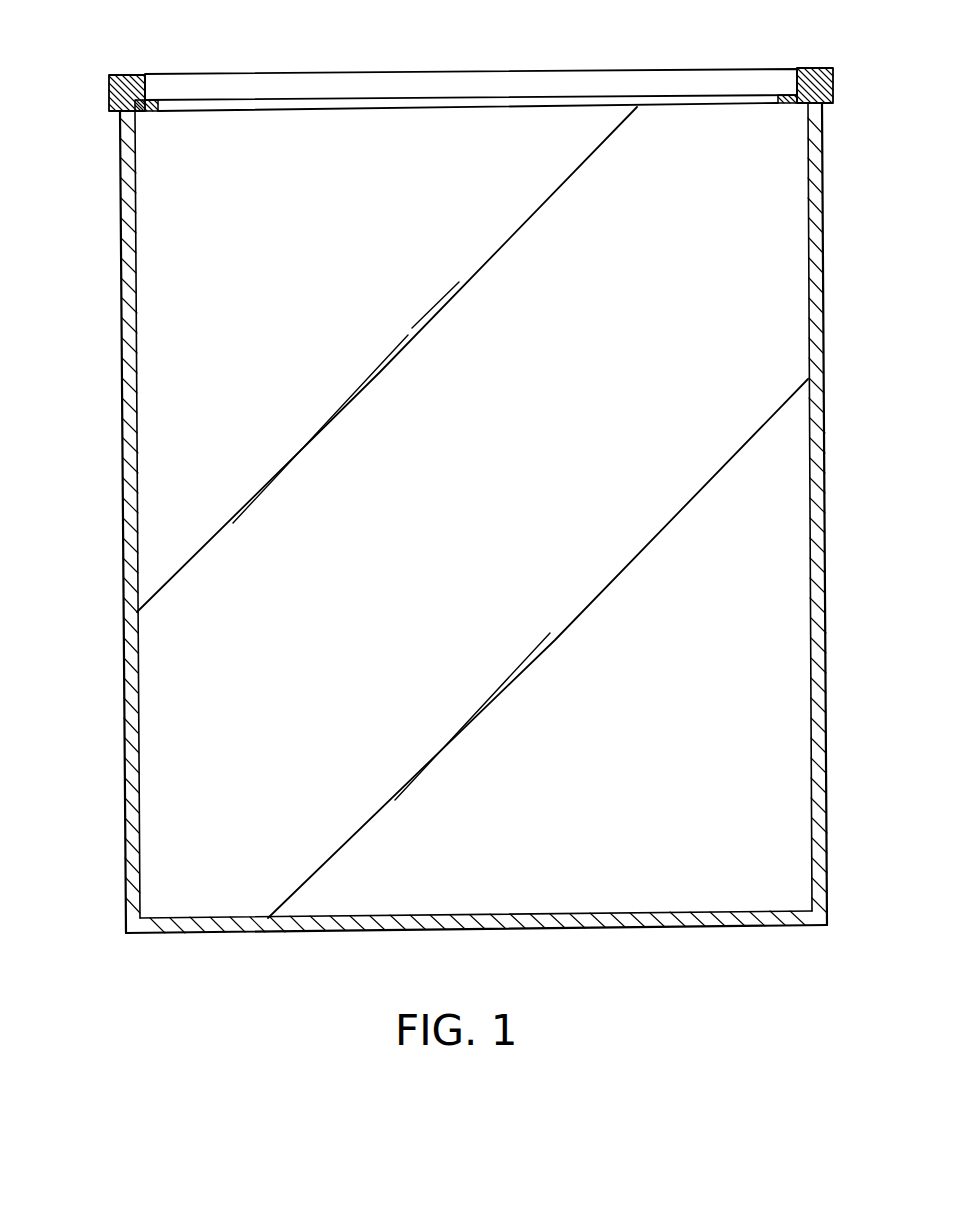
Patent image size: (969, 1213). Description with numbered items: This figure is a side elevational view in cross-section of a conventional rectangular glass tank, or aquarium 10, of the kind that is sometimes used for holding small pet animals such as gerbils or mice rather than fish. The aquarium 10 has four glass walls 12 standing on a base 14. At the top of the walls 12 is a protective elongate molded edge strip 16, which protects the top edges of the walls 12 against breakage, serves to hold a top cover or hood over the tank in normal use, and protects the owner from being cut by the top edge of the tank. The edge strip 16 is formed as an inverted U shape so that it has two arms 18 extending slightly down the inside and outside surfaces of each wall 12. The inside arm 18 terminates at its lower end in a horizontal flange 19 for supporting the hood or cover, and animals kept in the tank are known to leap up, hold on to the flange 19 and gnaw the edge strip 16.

The aquarium 10 is at (464, 494).
The glass wall 12 is at (122, 457).
The base 14 is at (318, 931).
The edge strip 16 is at (647, 68).
The arm 18 is at (147, 83).
The horizontal flange 19 is at (147, 110).